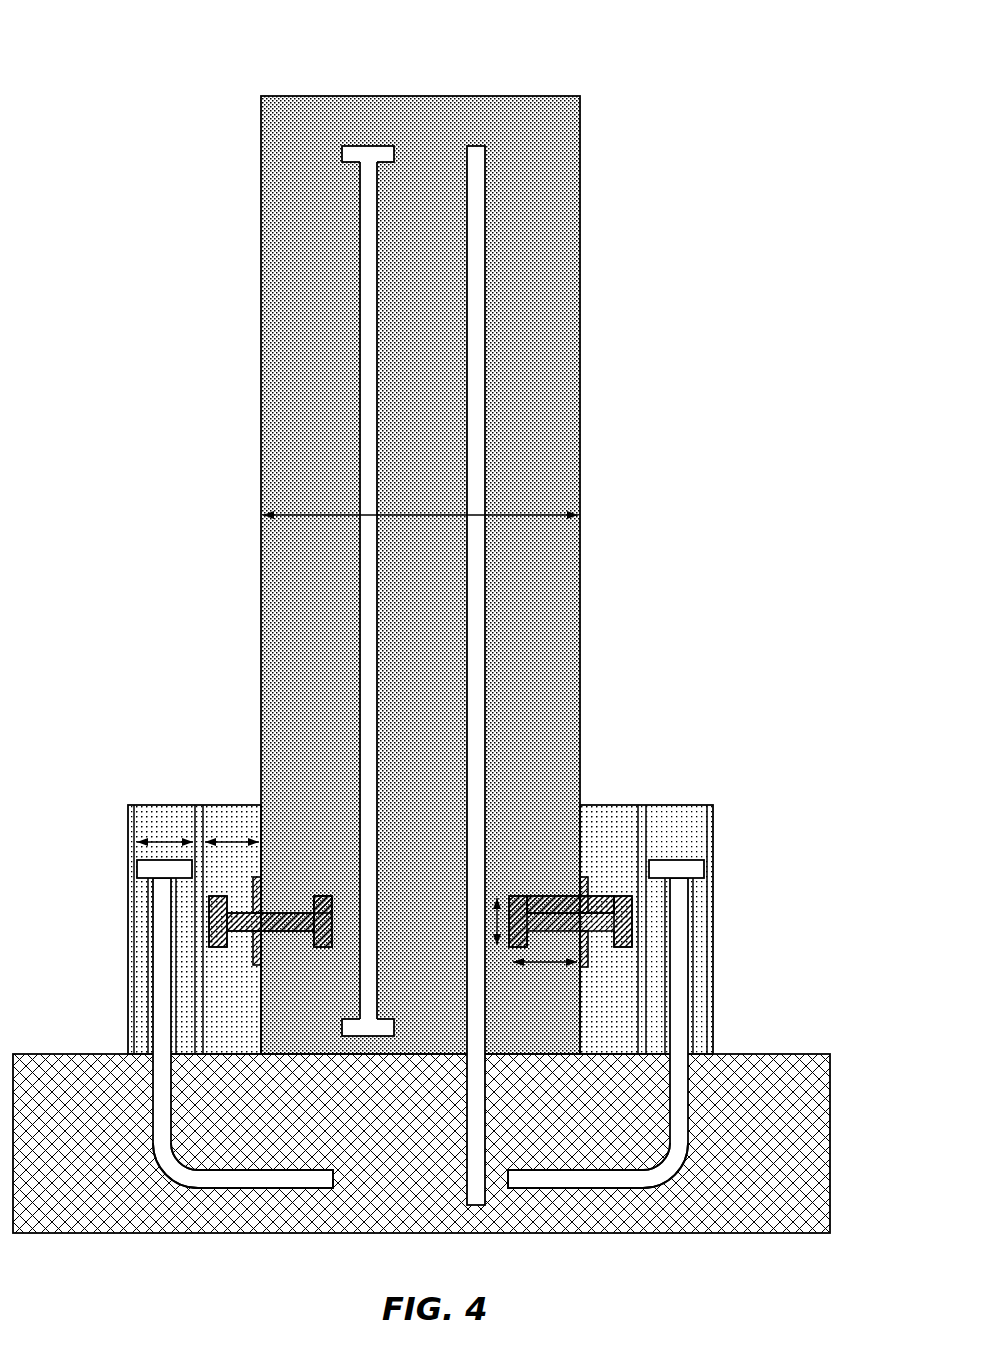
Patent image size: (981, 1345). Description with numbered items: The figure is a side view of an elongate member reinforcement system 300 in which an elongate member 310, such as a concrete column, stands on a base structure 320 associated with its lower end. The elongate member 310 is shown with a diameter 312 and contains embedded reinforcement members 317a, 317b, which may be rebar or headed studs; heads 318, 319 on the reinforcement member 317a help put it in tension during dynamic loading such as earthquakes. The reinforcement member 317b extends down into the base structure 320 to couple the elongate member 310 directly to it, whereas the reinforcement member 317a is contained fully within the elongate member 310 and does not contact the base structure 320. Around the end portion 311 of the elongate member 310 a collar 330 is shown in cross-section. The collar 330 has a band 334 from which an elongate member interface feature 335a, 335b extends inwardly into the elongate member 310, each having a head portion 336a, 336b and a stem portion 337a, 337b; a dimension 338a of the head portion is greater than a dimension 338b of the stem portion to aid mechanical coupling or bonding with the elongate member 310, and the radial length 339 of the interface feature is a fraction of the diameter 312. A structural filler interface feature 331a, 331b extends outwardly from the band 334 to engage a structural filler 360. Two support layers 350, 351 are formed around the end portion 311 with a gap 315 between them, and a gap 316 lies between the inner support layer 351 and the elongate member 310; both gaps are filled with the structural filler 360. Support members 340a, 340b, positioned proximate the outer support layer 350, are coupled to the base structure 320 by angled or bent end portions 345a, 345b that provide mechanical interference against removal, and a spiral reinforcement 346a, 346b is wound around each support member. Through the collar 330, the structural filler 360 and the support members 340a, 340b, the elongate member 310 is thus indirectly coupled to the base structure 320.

The elongate member reinforcement system 300 is at (172, 48).
The elongate member 310 is at (261, 207).
The end portion 311 is at (603, 822).
The diameter 312 is at (420, 514).
The gap 315 is at (170, 838).
The gap 316 is at (236, 838).
The reinforcement member 317a is at (359, 640).
The reinforcement member 317b is at (485, 638).
The head 318 is at (383, 146).
The head 319 is at (388, 1018).
The base structure 320 is at (43, 1052).
The collar 330 is at (273, 855).
The structural filler interface feature 331a is at (226, 959).
The structural filler interface feature 331b is at (612, 959).
The band 334 is at (259, 892).
The elongate member interface feature 335a is at (341, 906).
The elongate member interface feature 335b is at (555, 871).
The head portion 336a is at (322, 936).
The head portion 336b is at (526, 894).
The stem portion 337a is at (287, 934).
The stem portion 337b is at (549, 909).
The dimension of the head portion 338a is at (494, 922).
The dimension of the stem portion 338b is at (542, 902).
The radial length 339 is at (545, 964).
The support member 340a is at (163, 956).
The support member 340b is at (682, 967).
The end portion 345a is at (275, 1145).
The end portion 345b is at (575, 1145).
The spiral reinforcement 346a is at (148, 912).
The spiral reinforcement 346b is at (693, 927).
The support layer 350 is at (128, 830).
The support layer 351 is at (211, 822).
The structural filler 360 is at (233, 1041).